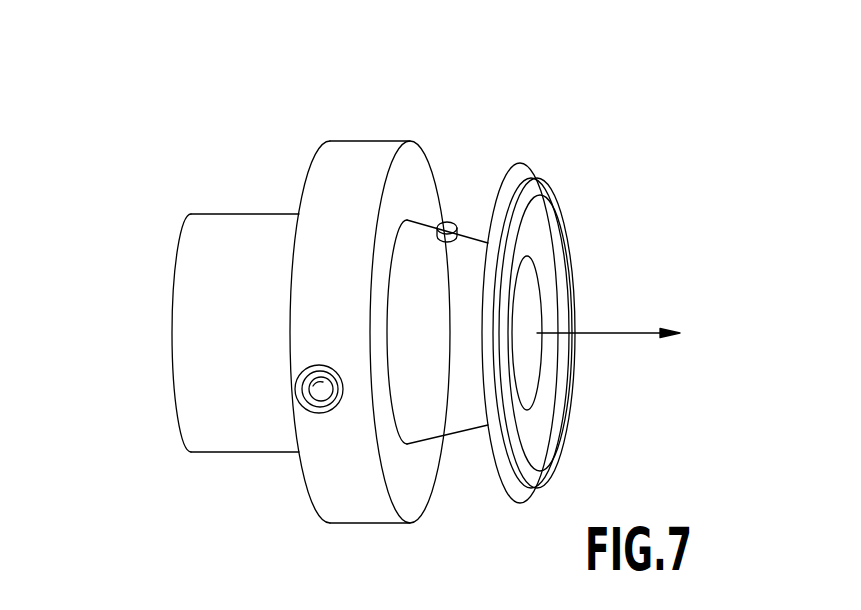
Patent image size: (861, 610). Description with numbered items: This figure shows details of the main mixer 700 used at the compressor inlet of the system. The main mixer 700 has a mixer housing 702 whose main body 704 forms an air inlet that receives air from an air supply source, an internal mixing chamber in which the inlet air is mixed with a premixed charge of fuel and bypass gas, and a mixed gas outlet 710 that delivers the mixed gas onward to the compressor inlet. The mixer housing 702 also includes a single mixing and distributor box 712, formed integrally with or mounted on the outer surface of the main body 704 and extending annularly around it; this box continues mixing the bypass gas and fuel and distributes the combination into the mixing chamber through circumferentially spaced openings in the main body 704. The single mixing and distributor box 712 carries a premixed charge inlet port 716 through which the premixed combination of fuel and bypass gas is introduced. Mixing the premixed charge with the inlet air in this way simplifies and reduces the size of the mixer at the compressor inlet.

The main mixer 700 is at (598, 148).
The mixer housing 702 is at (197, 193).
The main body 704 is at (162, 338).
The mixed gas outlet 710 is at (529, 297).
The single mixing and distributor box 712 is at (410, 132).
The premixed charge inlet port 716 is at (297, 402).